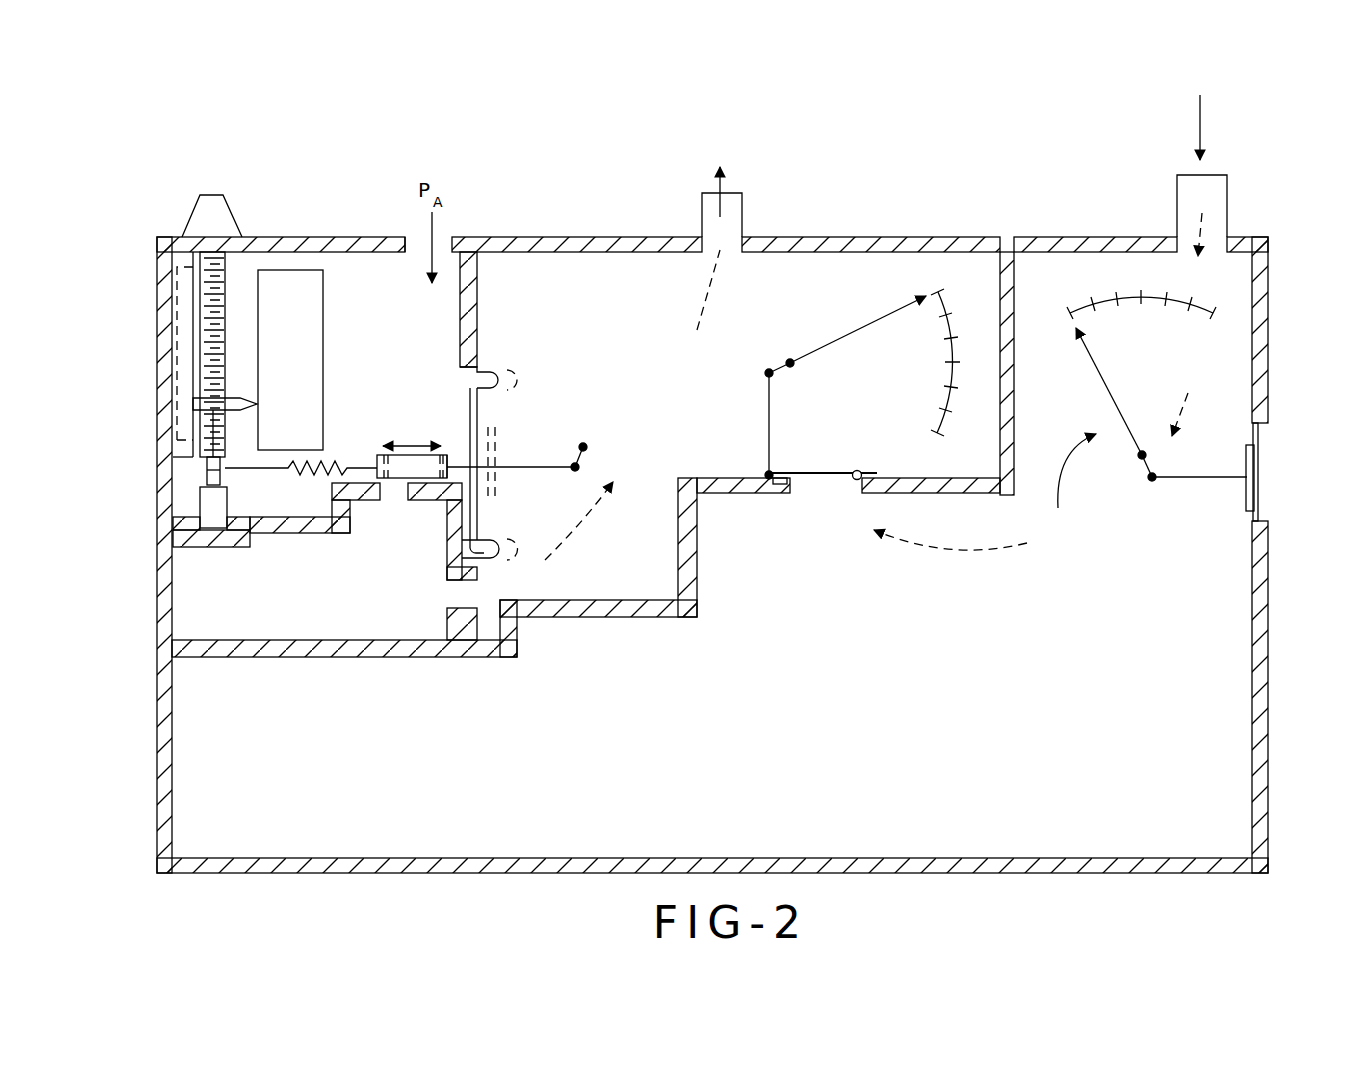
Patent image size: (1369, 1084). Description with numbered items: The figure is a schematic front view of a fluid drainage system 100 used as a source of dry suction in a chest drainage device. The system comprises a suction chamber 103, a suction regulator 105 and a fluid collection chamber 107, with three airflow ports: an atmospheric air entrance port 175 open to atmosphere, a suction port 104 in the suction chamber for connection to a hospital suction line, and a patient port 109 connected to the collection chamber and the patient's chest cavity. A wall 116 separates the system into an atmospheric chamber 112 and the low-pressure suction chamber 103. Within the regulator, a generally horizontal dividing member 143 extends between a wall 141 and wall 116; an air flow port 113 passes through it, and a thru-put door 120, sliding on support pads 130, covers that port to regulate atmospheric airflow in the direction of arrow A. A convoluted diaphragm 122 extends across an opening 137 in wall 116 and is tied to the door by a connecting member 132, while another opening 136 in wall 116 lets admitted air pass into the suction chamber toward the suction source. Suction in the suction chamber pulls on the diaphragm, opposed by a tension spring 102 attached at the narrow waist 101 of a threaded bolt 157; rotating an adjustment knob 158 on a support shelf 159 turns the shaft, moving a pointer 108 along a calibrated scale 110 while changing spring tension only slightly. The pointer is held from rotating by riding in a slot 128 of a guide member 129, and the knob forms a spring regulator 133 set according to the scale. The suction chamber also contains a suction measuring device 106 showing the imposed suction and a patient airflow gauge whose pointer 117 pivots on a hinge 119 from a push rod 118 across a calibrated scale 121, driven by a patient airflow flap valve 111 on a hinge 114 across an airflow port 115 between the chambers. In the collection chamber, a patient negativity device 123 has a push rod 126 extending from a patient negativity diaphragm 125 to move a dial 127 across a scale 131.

The fluid drainage system 100 is at (104, 670).
The waist 101 is at (210, 470).
The tension spring 102 is at (335, 474).
The suction chamber 103 is at (645, 388).
The suction port 104 is at (702, 215).
The suction regulator 105 is at (300, 620).
The suction measuring device 106 is at (615, 420).
The fluid collection chamber 107 is at (955, 708).
The pointer 108 is at (240, 410).
The patient port 109 is at (1230, 208).
The calibrated scale 110 is at (325, 305).
The patient airflow flap valve 111 is at (808, 480).
The atmospheric chamber 112 is at (345, 356).
The air flow port 113 is at (397, 500).
The hinge 114 is at (857, 470).
The airflow port 115 is at (838, 490).
The wall 116 is at (480, 266).
The pointer 117 is at (860, 330).
The push rod 118 is at (770, 432).
The hinge 119 is at (788, 360).
The thru-put door 120 is at (378, 458).
The calibrated scale 121 is at (952, 327).
The convoluted diaphragm 122 is at (483, 414).
The patient negativity device 123 is at (985, 492).
The patient negativity diaphragm 125 is at (1258, 450).
The push rod 126 is at (1203, 480).
The dial 127 is at (1088, 357).
The slot 128 is at (166, 297).
The guide member 129 is at (185, 345).
The support pads 130 is at (482, 490).
The scale 131 is at (1105, 305).
The connecting member 132 is at (457, 453).
The spring regulator 133 is at (168, 206).
The opening 136 is at (458, 593).
The opening 137 is at (460, 395).
The wall 141 is at (190, 413).
The dividing member 143 is at (278, 533).
The threaded bolt 157 is at (200, 354).
The adjustment knob 158 is at (232, 213).
The support shelf 159 is at (297, 237).
The atmospheric air entrance port 175 is at (413, 243).